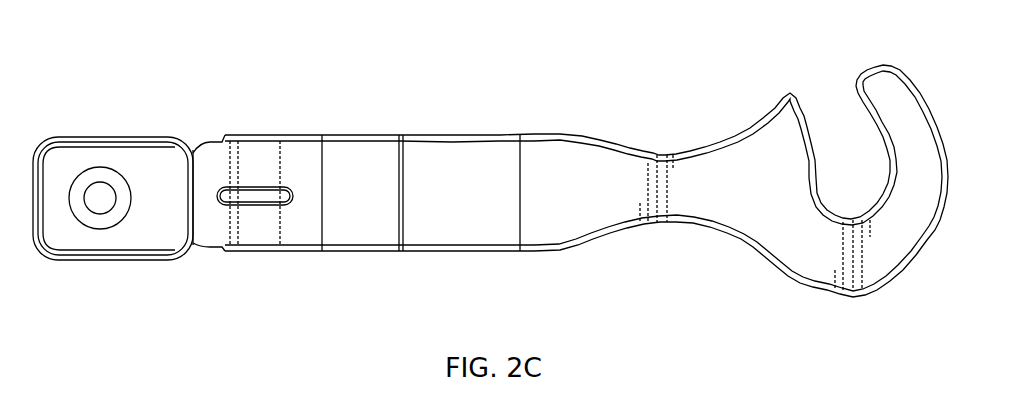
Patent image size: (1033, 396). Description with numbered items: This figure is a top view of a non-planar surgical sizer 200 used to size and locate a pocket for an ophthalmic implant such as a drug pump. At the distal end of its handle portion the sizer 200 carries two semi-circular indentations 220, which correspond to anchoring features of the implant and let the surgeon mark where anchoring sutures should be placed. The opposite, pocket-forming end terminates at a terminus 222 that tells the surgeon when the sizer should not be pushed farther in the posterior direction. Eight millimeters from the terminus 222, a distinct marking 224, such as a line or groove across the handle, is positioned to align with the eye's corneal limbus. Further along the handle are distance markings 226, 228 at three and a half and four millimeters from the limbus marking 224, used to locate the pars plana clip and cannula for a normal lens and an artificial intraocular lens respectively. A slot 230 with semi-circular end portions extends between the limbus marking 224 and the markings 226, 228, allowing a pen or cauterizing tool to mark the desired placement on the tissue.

The surgical sizer 200 is at (490, 158).
The semi-circular indentations 220 is at (194, 140).
The terminus 222 is at (193, 207).
The distinct marking 224 is at (283, 141).
The distance marking 226 is at (238, 141).
The distance marking 228 is at (229, 141).
The slot 230 is at (262, 196).